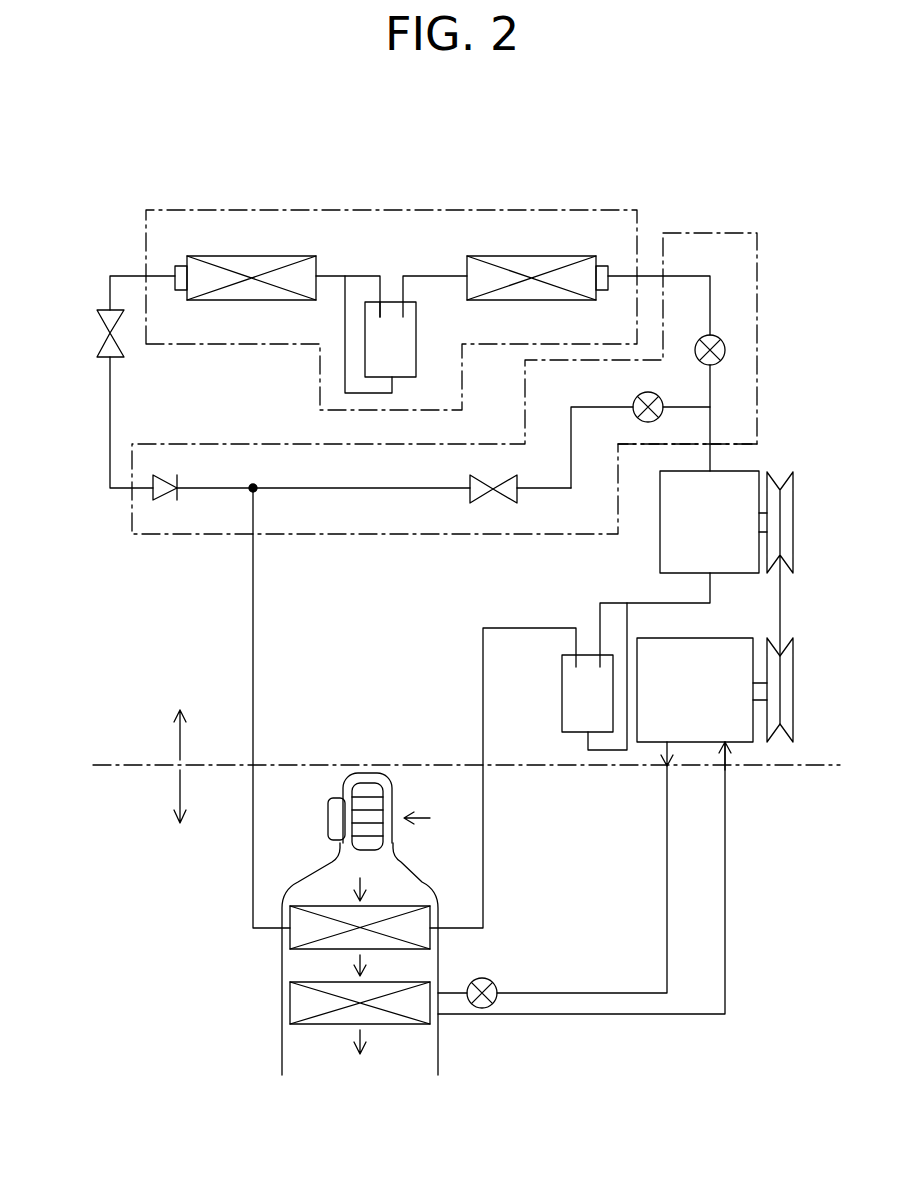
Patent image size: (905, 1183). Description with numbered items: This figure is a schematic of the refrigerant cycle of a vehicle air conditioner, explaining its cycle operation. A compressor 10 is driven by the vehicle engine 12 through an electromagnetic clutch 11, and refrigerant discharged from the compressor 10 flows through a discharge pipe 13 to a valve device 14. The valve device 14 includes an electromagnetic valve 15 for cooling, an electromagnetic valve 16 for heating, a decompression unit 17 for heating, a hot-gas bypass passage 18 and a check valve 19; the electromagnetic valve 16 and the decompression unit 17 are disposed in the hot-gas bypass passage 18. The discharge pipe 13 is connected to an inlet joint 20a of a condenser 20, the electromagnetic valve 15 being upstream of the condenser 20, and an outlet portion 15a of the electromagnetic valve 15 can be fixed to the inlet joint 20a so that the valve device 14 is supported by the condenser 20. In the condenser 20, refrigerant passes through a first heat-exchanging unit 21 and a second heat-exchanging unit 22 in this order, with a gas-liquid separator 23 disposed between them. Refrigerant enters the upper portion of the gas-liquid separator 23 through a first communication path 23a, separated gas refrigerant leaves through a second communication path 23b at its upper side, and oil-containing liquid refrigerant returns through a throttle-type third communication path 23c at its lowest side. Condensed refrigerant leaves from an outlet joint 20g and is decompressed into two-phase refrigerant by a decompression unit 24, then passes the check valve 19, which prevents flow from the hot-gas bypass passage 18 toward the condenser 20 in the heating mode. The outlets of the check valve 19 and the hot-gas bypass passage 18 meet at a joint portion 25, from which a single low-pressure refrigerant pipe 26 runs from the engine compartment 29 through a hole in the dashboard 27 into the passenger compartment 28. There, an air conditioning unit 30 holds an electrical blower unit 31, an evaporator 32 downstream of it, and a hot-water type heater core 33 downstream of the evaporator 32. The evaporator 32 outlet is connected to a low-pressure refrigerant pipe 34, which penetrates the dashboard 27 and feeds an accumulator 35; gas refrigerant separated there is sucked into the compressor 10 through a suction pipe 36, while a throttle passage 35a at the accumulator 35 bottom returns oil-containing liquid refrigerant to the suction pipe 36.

The compressor 10 is at (746, 581).
The electromagnetic clutch 11 is at (793, 540).
The vehicle engine 12 is at (740, 735).
The discharge pipe 13 is at (735, 445).
The valve device 14 is at (760, 278).
The electromagnetic valve for cooling 15 is at (725, 350).
The outlet portion of the electromagnetic valve 15a is at (710, 310).
The electromagnetic valve for heating 16 is at (648, 392).
The decompression unit for heating 17 is at (497, 502).
The hot-gas bypass passage 18 is at (415, 490).
The check valve 19 is at (160, 500).
The condenser 20 is at (555, 208).
The inlet joint 20a is at (603, 262).
The outlet joint 20g is at (181, 265).
The first heat-exchanging unit 21 is at (527, 256).
The second heat-exchanging unit 22 is at (253, 256).
The gas-liquid separator 23 is at (418, 320).
The first communication path 23a is at (410, 295).
The second communication path 23b is at (387, 290).
The third communication path 23c is at (345, 323).
The decompression unit 24 is at (100, 335).
The joint portion 25 is at (251, 492).
The low-pressure refrigerant pipe 26 is at (253, 600).
The dashboard 27 is at (118, 768).
The passenger compartment 28 is at (175, 832).
The engine compartment 29 is at (175, 705).
The air conditioning unit 30 is at (440, 908).
The electrical blower unit 31 is at (380, 828).
The evaporator 32 is at (300, 932).
The hot-water type heater core 33 is at (300, 1004).
The low-pressure refrigerant pipe 34 is at (483, 882).
The accumulator 35 is at (562, 680).
The throttle passage 35a is at (590, 746).
The suction pipe 36 is at (600, 618).